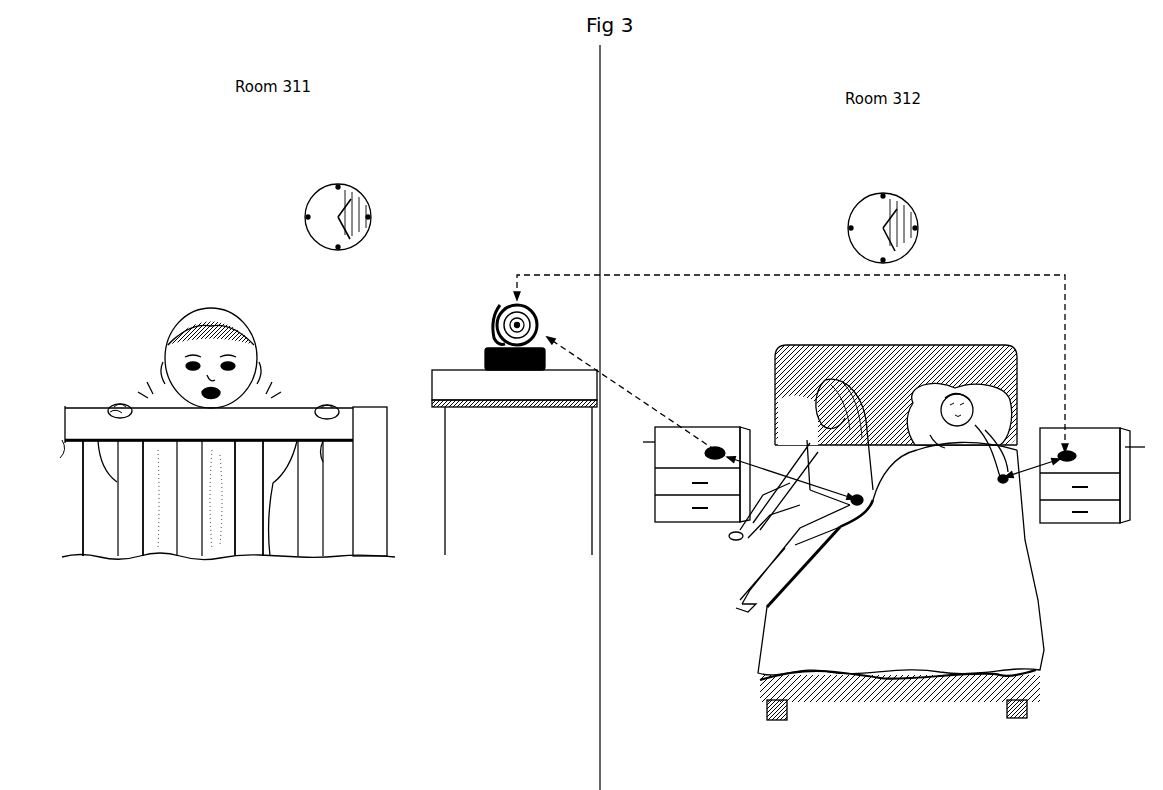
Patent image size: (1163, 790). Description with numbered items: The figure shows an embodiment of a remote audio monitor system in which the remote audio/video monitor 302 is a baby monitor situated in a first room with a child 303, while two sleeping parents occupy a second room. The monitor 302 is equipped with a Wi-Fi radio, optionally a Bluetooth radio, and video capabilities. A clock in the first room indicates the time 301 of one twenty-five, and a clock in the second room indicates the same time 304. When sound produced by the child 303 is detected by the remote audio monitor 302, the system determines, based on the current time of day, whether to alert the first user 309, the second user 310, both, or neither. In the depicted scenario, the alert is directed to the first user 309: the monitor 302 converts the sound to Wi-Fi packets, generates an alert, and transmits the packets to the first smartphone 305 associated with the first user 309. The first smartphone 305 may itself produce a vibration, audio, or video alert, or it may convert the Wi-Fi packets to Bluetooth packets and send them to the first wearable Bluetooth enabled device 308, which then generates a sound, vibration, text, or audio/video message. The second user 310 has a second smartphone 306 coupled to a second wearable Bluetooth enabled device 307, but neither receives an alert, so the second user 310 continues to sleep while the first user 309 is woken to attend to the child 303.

The time 301 is at (343, 185).
The remote audio/video monitor 302 is at (513, 298).
The child 303 is at (175, 330).
The time 304 is at (862, 202).
The first smartphone 305 is at (713, 447).
The second smartphone 306 is at (1068, 453).
The second wearable Bluetooth enabled device 307 is at (1005, 483).
The first wearable Bluetooth enabled device 308 is at (858, 502).
The first user 309 is at (812, 427).
The second user 310 is at (940, 400).